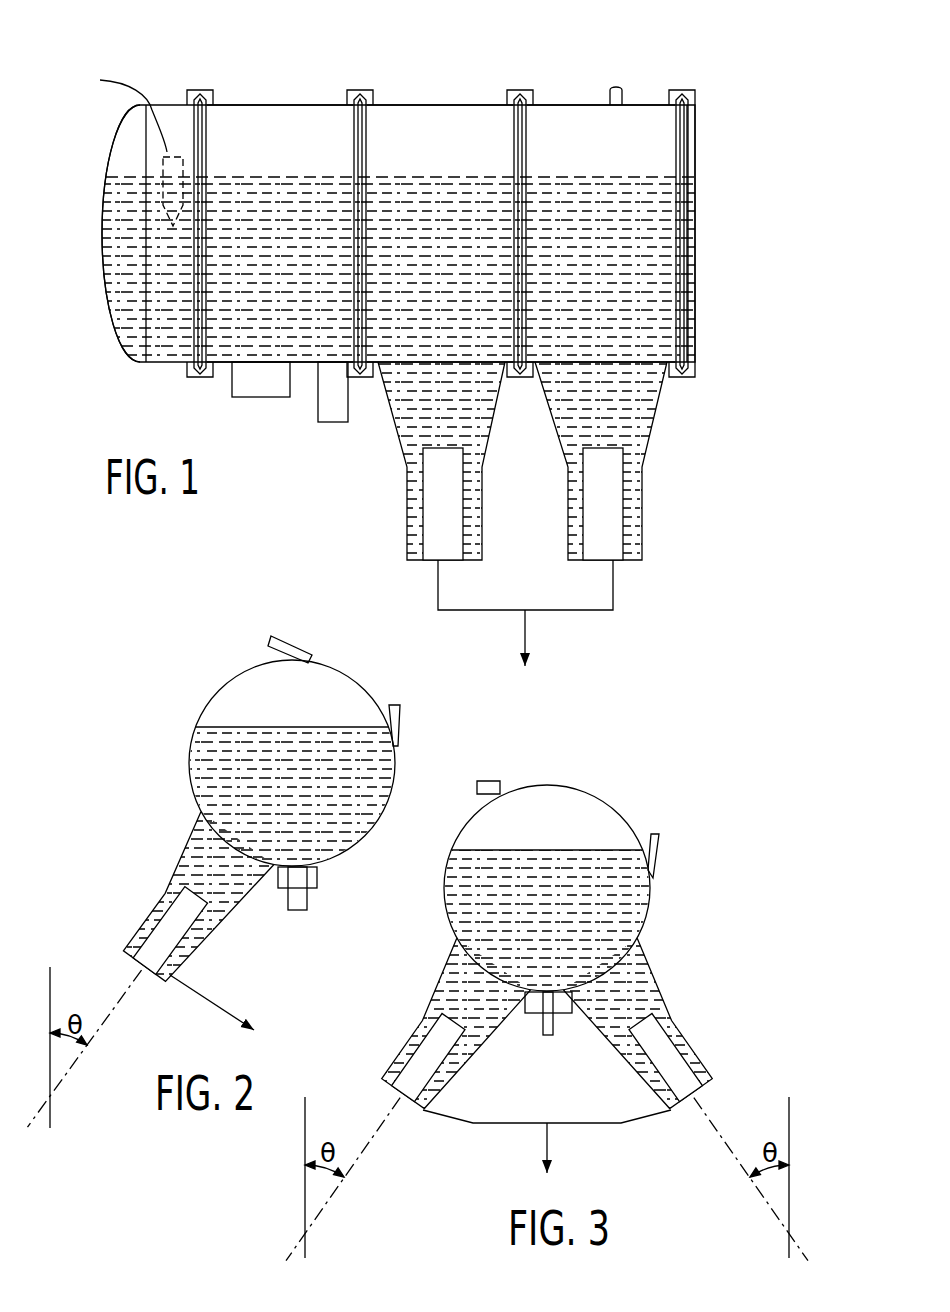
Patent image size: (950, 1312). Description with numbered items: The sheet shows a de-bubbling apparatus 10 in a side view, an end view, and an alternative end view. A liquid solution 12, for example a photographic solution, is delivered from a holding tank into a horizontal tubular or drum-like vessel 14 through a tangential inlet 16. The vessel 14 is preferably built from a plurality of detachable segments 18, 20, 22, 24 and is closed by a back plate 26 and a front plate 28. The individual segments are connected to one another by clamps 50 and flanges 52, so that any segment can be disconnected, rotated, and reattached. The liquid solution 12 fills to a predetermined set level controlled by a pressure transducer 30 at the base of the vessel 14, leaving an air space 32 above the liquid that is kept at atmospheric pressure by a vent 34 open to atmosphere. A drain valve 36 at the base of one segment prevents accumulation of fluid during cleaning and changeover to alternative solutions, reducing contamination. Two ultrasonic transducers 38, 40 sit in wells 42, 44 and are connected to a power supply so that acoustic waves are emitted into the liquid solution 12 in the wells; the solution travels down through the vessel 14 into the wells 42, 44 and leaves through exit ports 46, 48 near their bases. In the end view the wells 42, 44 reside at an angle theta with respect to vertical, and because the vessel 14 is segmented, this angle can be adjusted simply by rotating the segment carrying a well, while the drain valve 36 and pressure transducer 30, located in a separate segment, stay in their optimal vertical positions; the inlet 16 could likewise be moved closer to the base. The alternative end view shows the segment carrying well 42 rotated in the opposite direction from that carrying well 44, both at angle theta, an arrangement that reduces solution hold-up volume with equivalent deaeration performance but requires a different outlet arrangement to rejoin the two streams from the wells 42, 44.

In FIG. 1, the debubbling apparatus 10 is at (712, 66).
In FIG. 2, the debubbling apparatus 10 is at (143, 684).
In FIG. 3, the debubbling apparatus 10 is at (635, 767).
In FIG. 1, the liquid solution 12 is at (430, 259).
In FIG. 2, the liquid solution 12 is at (277, 798).
In FIG. 3, the liquid solution 12 is at (530, 918).
In FIG. 1, the vessel 14 is at (237, 101).
In FIG. 2, the vessel 14 is at (184, 773).
In FIG. 3, the vessel 14 is at (446, 906).
In FIG. 1, the inlet 16 is at (118, 108).
In FIG. 2, the inlet 16 is at (401, 716).
In FIG. 3, the inlet 16 is at (660, 846).
In FIG. 1, the segment 18 is at (567, 104).
In FIG. 1, the segment 20 is at (462, 104).
In FIG. 1, the segment 22 is at (298, 104).
In FIG. 1, the segment 24 is at (172, 104).
In FIG. 1, the back plate 26 is at (104, 176).
In FIG. 1, the front plate 28 is at (696, 226).
In FIG. 1, the pressure transducer 30 is at (333, 423).
In FIG. 2, the pressure transducer 30 is at (298, 912).
In FIG. 3, the pressure transducer 30 is at (546, 1036).
In FIG. 1, the air space 32 is at (445, 157).
In FIG. 2, the air space 32 is at (277, 708).
In FIG. 3, the air space 32 is at (539, 834).
In FIG. 1, the vent 34 is at (620, 88).
In FIG. 2, the vent 34 is at (270, 643).
In FIG. 3, the vent 34 is at (495, 782).
In FIG. 1, the drain valve 36 is at (262, 398).
In FIG. 2, the drain valve 36 is at (318, 878).
In FIG. 3, the drain valve 36 is at (570, 1014).
In FIG. 1, the ultrasonic transducer 38 is at (614, 516).
In FIG. 2, the ultrasonic transducer 38 is at (155, 946).
In FIG. 3, the ultrasonic transducer 38 is at (412, 1068).
In FIG. 1, the ultrasonic transducer 40 is at (436, 528).
In FIG. 3, the ultrasonic transducer 40 is at (680, 1068).
In FIG. 1, the well 42 is at (643, 495).
In FIG. 2, the well 42 is at (170, 888).
In FIG. 3, the well 42 is at (432, 1016).
In FIG. 1, the well 44 is at (407, 500).
In FIG. 3, the well 44 is at (684, 1020).
In FIG. 1, the exit port 46 is at (614, 590).
In FIG. 2, the exit port 46 is at (205, 996).
In FIG. 3, the exit port 46 is at (465, 1122).
In FIG. 1, the exit port 48 is at (437, 588).
In FIG. 3, the exit port 48 is at (632, 1122).
In FIG. 1, the clamp 50 is at (356, 90).
In FIG. 1, the flange 52 is at (370, 120).